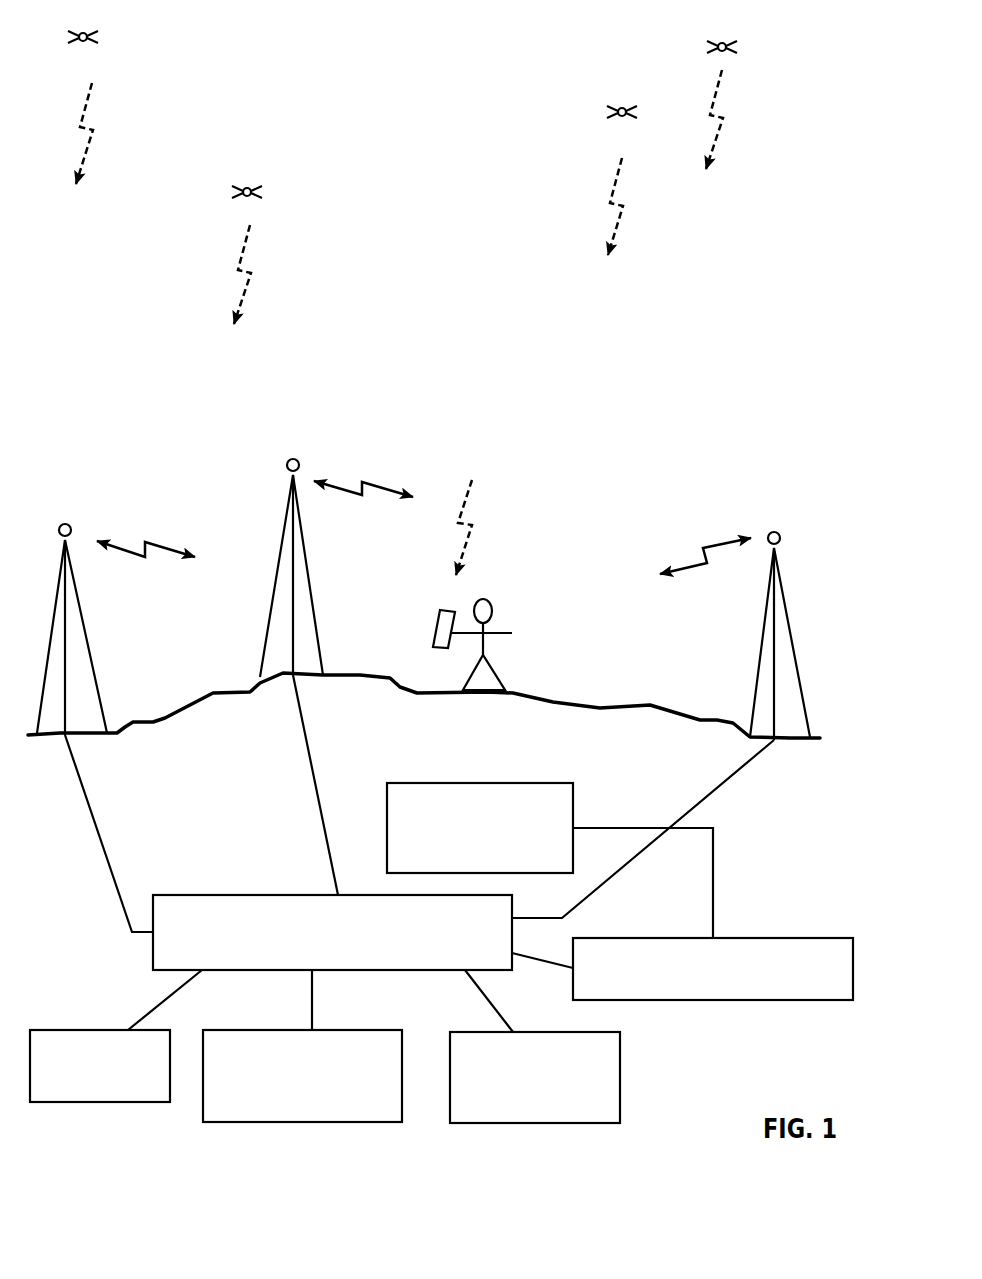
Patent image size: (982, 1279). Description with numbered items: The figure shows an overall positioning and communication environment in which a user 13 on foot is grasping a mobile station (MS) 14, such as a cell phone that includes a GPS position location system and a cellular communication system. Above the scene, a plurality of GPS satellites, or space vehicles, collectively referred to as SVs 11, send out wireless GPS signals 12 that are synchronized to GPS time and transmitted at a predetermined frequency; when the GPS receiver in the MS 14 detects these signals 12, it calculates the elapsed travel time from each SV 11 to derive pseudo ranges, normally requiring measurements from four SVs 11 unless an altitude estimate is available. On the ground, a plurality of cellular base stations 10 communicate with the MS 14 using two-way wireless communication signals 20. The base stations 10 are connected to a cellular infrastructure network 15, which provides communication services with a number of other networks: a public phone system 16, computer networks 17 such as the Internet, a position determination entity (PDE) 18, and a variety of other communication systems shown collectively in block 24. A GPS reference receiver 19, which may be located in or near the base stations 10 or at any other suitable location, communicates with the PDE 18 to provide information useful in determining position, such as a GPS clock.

The cellular base stations 10 is at (288, 460).
The GPS satellites (space vehicles) 11 is at (546, 88).
The GPS signals 12 is at (102, 178).
The user 13 is at (516, 615).
The mobile station (MS) 14 is at (437, 627).
The cellular infrastructure network 15 is at (332, 919).
The public phone system 16 is at (100, 1054).
The computer networks 17 is at (302, 1064).
The position determination entity (PDE) 18 is at (713, 956).
The GPS reference receiver 19 is at (480, 815).
The two-way communication signals 20 is at (177, 543).
The other communication systems 24 is at (554, 1077).